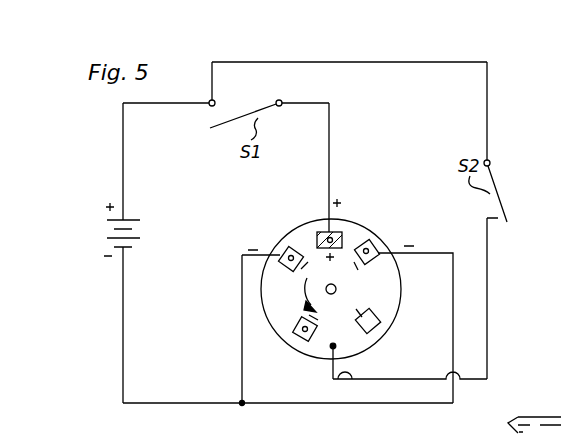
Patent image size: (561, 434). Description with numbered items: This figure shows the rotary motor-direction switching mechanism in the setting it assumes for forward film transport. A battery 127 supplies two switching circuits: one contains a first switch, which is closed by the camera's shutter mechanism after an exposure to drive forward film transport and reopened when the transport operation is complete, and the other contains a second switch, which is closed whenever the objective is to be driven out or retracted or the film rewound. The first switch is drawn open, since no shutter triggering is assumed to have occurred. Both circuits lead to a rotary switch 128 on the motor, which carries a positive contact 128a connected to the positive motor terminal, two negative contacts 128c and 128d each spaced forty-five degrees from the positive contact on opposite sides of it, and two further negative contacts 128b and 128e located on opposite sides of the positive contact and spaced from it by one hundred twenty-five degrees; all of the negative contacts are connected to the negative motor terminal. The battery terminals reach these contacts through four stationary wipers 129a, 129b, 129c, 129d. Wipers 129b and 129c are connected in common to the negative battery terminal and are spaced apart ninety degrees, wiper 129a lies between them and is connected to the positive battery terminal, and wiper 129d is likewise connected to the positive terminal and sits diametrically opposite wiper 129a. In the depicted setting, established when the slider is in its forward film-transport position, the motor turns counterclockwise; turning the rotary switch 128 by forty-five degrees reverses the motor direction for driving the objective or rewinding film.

The battery 127 is at (108, 233).
The rotary switch 128 is at (368, 231).
The positive contact 128a is at (342, 230).
The negative contact 128b is at (300, 340).
The negative contact 128c is at (285, 246).
The negative contact 128d is at (380, 248).
The negative contact 128e is at (376, 330).
The stationary wiper 129a is at (331, 133).
The stationary wiper 129b is at (242, 276).
The stationary wiper 129c is at (453, 275).
The stationary wiper 129d is at (345, 372).